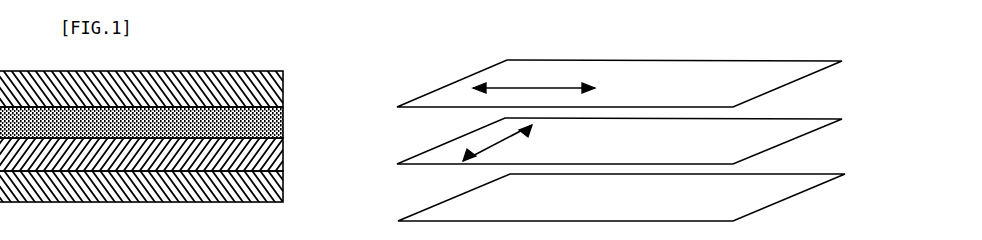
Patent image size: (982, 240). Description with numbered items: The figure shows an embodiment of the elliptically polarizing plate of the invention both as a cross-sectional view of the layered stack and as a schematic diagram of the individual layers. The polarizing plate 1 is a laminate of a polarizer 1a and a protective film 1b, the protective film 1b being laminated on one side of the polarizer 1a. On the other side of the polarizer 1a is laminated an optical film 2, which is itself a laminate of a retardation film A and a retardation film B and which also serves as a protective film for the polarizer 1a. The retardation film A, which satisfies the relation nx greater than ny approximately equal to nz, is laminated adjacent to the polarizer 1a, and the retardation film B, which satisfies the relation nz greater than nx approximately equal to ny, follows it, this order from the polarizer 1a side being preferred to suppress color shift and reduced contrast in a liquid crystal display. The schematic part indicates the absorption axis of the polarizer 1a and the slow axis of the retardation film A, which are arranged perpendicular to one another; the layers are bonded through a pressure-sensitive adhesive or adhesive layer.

The polarizing plate 1 is at (425, 99).
The polarizer 1a is at (176, 122).
The protective film 1b is at (265, 91).
The optical film 2 is at (442, 169).
The retardation film A is at (270, 161).
The retardation film B is at (272, 191).